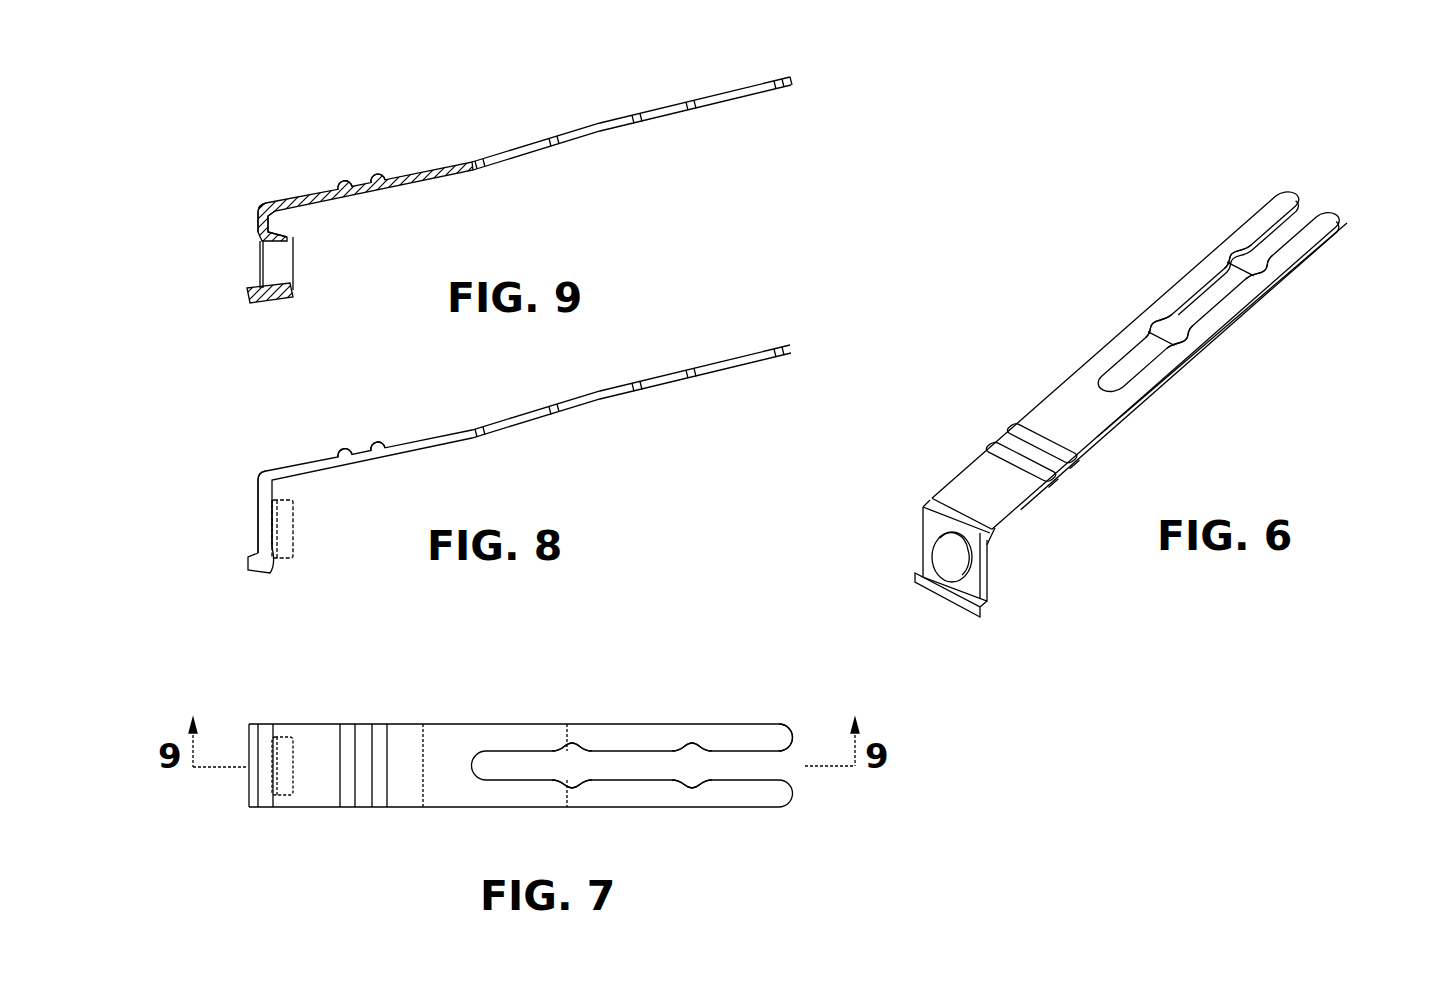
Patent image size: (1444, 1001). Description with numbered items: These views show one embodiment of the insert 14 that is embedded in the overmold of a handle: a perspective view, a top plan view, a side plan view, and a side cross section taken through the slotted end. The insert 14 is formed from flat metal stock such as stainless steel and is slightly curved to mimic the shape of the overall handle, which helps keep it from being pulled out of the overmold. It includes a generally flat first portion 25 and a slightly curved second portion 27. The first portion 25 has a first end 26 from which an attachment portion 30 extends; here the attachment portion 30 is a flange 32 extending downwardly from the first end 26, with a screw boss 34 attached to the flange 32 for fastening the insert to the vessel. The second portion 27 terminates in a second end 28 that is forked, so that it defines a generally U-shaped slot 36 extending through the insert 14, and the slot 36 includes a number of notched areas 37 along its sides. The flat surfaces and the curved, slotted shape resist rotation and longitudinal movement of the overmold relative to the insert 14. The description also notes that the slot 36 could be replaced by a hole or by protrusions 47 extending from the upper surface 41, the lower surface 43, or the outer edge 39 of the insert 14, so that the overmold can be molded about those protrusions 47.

In FIG. 9, the insert 14 is at (493, 194).
In FIG. 8, the insert 14 is at (457, 474).
In FIG. 7, the insert 14 is at (518, 733).
In FIG. 6, the insert 14 is at (1114, 383).
In FIG. 9, the first portion 25 is at (325, 188).
In FIG. 7, the first portion 25 is at (456, 760).
In FIG. 9, the first end 26 is at (262, 200).
In FIG. 8, the first end 26 is at (262, 468).
In FIG. 7, the first end 26 is at (249, 727).
In FIG. 6, the first end 26 is at (930, 503).
In FIG. 9, the second portion 27 is at (618, 105).
In FIG. 7, the second portion 27 is at (628, 737).
In FIG. 9, the second end 28 is at (794, 81).
In FIG. 7, the second end 28 is at (797, 736).
In FIG. 6, the second end 28 is at (1234, 303).
In FIG. 9, the attachment portion 30 is at (262, 222).
In FIG. 8, the attachment portion 30 is at (262, 492).
In FIG. 6, the attachment portion 30 is at (920, 568).
In FIG. 9, the flange 32 is at (270, 302).
In FIG. 8, the flange 32 is at (268, 573).
In FIG. 6, the flange 32 is at (988, 600).
In FIG. 9, the screw boss 34 is at (282, 232).
In FIG. 8, the screw boss 34 is at (287, 523).
In FIG. 7, the screw boss 34 is at (295, 790).
In FIG. 6, the screw boss 34 is at (995, 565).
In FIG. 7, the slot 36 is at (745, 772).
In FIG. 6, the slot 36 is at (1199, 291).
In FIG. 7, the notched areas 37 is at (692, 770).
In FIG. 6, the notched areas 37 is at (1209, 297).
In FIG. 6, the outer edge 39 is at (1185, 366).
In FIG. 8, the upper surface 41 is at (620, 384).
In FIG. 6, the upper surface 41 is at (1134, 362).
In FIG. 8, the lower surface 43 is at (583, 418).
In FIG. 9, the protrusions 47 is at (378, 180).
In FIG. 8, the protrusions 47 is at (380, 445).
In FIG. 7, the protrusions 47 is at (363, 765).
In FIG. 6, the protrusions 47 is at (1031, 452).